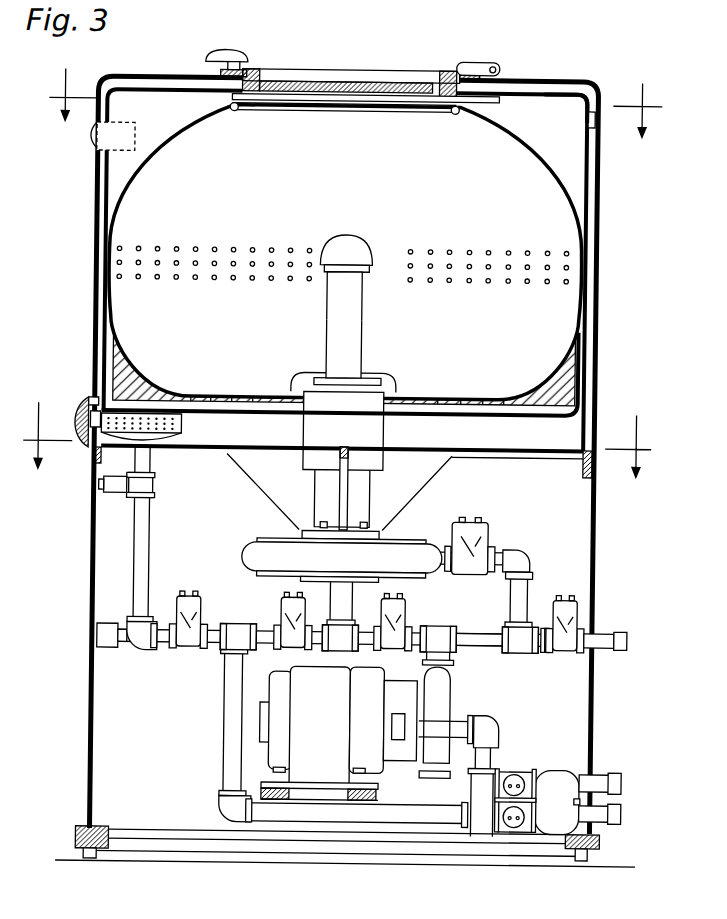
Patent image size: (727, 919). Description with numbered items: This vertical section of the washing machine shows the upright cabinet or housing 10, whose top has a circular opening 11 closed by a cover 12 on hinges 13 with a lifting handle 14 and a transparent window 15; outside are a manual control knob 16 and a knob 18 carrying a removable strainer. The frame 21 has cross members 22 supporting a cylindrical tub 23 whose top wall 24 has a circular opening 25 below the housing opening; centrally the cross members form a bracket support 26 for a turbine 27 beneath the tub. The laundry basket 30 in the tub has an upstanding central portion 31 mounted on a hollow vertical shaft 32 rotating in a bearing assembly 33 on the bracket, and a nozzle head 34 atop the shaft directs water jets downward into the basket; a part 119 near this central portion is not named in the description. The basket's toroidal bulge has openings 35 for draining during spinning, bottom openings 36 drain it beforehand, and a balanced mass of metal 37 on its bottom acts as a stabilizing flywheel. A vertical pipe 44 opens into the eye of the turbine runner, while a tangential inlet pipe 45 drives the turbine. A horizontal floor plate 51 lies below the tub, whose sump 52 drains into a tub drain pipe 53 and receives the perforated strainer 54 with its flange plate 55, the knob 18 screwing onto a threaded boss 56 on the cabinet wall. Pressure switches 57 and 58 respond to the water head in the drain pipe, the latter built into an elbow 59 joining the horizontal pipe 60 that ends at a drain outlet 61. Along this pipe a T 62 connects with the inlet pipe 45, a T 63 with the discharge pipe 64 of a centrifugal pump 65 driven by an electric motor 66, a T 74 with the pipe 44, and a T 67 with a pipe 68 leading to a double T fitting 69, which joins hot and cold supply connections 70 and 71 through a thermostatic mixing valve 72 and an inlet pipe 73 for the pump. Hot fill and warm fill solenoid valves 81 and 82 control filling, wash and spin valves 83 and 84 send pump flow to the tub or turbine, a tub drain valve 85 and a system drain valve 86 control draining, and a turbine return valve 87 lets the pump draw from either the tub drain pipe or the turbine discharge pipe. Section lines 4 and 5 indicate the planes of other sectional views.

The section line 4- 4 is at (356, 103).
The section line 5- 5 is at (337, 440).
The cabinet or housing 10 is at (596, 276).
The circular opening 11 is at (443, 80).
The cover 12 is at (370, 70).
The hinges 13 is at (488, 60).
The lifting handle 14 is at (212, 51).
The transparent window 15 is at (262, 86).
The manual control knob 16 is at (86, 134).
The knob 18 is at (88, 412).
The frame 21 is at (583, 488).
The cross members 22 is at (478, 455).
The cylindrical tub 23 is at (590, 190).
The top wall 24 is at (578, 90).
The circular opening 25 is at (455, 100).
The bracket support 26 is at (272, 496).
The turbine 27 is at (242, 551).
The laundry basket 30 is at (518, 146).
The upstanding central portion 31 is at (361, 295).
The hollow vertical shaft 32 is at (346, 325).
The bearing assembly 33 is at (372, 432).
The nozzle head 34 is at (345, 236).
The openings 35 is at (114, 277).
The bottom openings 36 is at (475, 400).
The balanced mass of metal 37 is at (551, 380).
The vertical pipe 44 is at (338, 604).
The tangential inlet pipe 45 is at (448, 546).
The horizontal wall or floor plate 51 is at (302, 446).
The well or sump 52 is at (182, 427).
The tub drain pipe 53 is at (148, 470).
The perforated strainer 54 is at (82, 420).
The flange plate 55 is at (88, 400).
The externally threaded boss 56 is at (92, 462).
The high pressure fill switch 57 is at (106, 490).
The low pressure drain switch 58 is at (100, 639).
The elbow 59 is at (153, 647).
The horizontal pipe 60 is at (500, 652).
The drain outlet 61 is at (630, 640).
The T connection 62 is at (543, 650).
The T connection 63 is at (442, 630).
The discharge pipe 64 is at (452, 659).
The centrifugal pump 65 is at (468, 700).
The electric motor 66 is at (338, 733).
The T connection 67 is at (237, 646).
The pipe 68 is at (226, 746).
The double T fitting 69 is at (484, 824).
The hot water supply pipe connection 70 is at (627, 779).
The cold water supply pipe connection 71 is at (627, 811).
The thermostatic mixing valve 72 is at (575, 768).
The inlet pipe 73 is at (490, 731).
The T connection 74 is at (341, 653).
The hot fill solenoid valve 81 is at (519, 779).
The warm fill solenoid valve 82 is at (519, 827).
The wash solenoid valve 83 is at (398, 615).
The spin solenoid valve 84 is at (482, 532).
The tub drain valve 85 is at (190, 596).
The system drain valve 86 is at (569, 614).
The turbine return valve 87 is at (283, 613).
The collar 119 is at (330, 276).